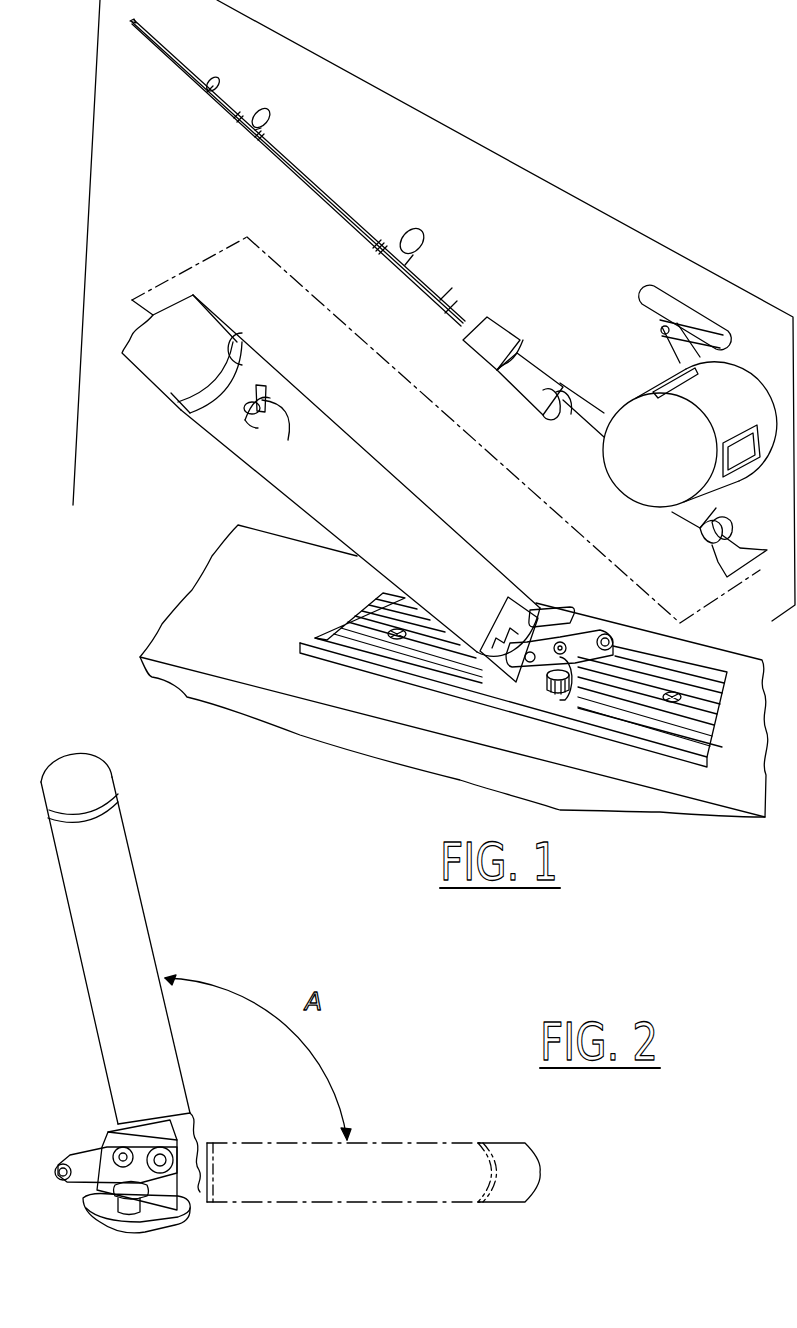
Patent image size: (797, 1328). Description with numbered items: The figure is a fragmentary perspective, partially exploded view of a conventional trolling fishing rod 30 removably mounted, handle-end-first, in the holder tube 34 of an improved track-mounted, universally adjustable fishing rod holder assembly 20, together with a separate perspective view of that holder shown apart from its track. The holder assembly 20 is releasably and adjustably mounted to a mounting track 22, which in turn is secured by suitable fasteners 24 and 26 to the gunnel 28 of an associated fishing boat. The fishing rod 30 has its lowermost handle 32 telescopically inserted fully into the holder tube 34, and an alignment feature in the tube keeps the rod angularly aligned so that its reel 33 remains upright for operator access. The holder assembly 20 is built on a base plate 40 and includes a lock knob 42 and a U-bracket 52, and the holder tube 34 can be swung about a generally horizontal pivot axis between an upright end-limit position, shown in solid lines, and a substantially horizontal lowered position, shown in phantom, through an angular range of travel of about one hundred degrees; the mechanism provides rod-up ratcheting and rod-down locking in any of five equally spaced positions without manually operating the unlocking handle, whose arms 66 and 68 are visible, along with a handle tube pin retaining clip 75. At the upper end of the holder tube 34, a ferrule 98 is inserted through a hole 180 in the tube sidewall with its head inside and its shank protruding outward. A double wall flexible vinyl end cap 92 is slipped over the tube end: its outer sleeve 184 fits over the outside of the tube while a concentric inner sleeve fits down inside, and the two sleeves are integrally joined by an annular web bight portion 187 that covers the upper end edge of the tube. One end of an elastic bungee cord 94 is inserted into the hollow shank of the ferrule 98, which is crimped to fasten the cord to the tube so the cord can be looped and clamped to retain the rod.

In FIG. 1, the fishing rod holder assembly 20 is at (497, 150).
In FIG. 2, the fishing rod holder assembly 20 is at (86, 1084).
In FIG. 1, the mounting track 22 is at (398, 682).
In FIG. 1, the fastener 24 is at (395, 630).
In FIG. 1, the fastener 26 is at (674, 694).
In FIG. 1, the gunnel 28 is at (688, 780).
In FIG. 1, the trolling fishing rod 30 is at (545, 352).
In FIG. 1, the rod handle 32 is at (165, 368).
In FIG. 1, the fishing rod reel 33 is at (745, 374).
In FIG. 1, the holder tube 34 is at (331, 412).
In FIG. 2, the holder tube 34 is at (428, 1140).
In FIG. 2, the base plate 40 is at (90, 1223).
In FIG. 1, the lock knob 42 is at (555, 693).
In FIG. 1, the U-bracket 52 is at (540, 596).
In FIG. 2, the unlocking handle arm 66 is at (90, 1158).
In FIG. 1, the unlocking handle arm 68 is at (575, 638).
In FIG. 1, the unlocking handle tube pin retaining clip 75 is at (600, 636).
In FIG. 1, the vinyl end cap 92 is at (180, 413).
In FIG. 2, the vinyl end cap 92 is at (120, 790).
In FIG. 1, the elastic bungee cord 94 is at (292, 422).
In FIG. 1, the bungee cord end locking ferrule 98 is at (253, 408).
In FIG. 1, the hole 180 is at (257, 417).
In FIG. 1, the outer sleeve 184 is at (258, 355).
In FIG. 1, the annular web bight portion 187 is at (237, 335).